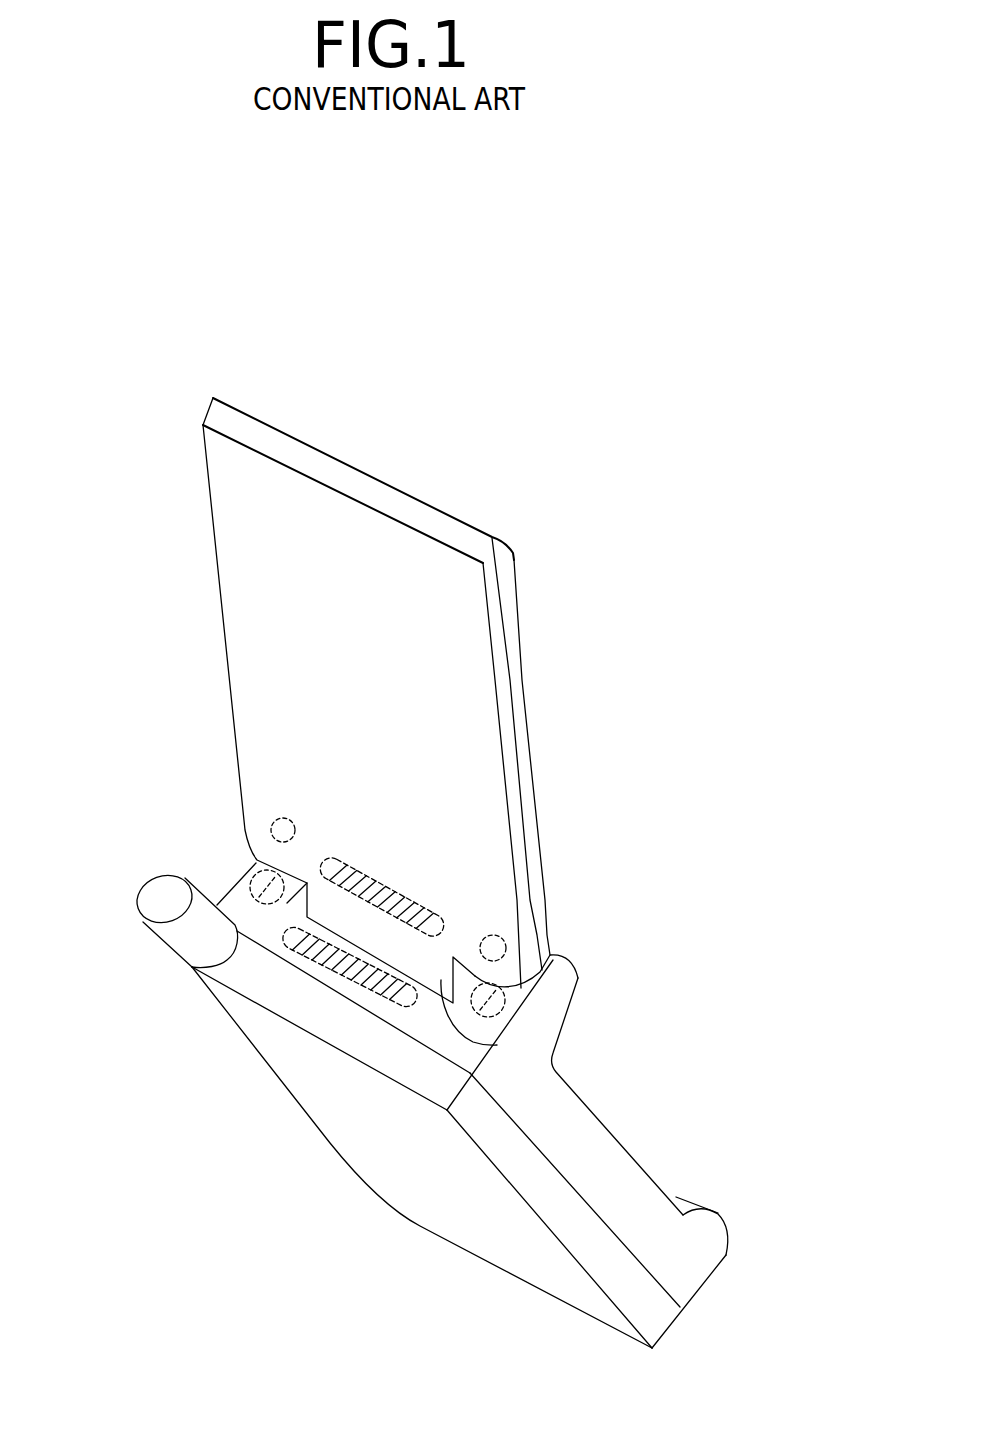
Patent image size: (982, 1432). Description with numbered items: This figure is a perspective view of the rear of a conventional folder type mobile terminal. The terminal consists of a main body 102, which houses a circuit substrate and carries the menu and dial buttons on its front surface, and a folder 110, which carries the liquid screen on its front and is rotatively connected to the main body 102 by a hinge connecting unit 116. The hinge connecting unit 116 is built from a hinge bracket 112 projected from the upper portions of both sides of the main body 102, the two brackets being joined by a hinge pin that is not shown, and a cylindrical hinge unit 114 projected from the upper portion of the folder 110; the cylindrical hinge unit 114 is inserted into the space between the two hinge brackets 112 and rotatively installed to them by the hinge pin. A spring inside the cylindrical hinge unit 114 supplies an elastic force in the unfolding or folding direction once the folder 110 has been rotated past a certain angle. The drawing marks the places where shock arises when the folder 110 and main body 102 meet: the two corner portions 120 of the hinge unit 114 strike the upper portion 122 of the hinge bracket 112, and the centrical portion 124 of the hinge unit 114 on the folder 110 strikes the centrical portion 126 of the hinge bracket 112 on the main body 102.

The main body 102 is at (707, 1237).
The folder 110 is at (470, 652).
The hinge bracket 112 is at (566, 976).
The cylindrical hinge unit 114 is at (497, 1043).
The hinge connecting unit 116 is at (628, 1004).
The corner portions of the hinge unit 120 is at (274, 821).
The upper portion of the hinge bracket 122 is at (254, 874).
The centrical portion of the hinge unit 124 is at (398, 884).
The centrical portion of the hinge bracket 126 is at (337, 970).